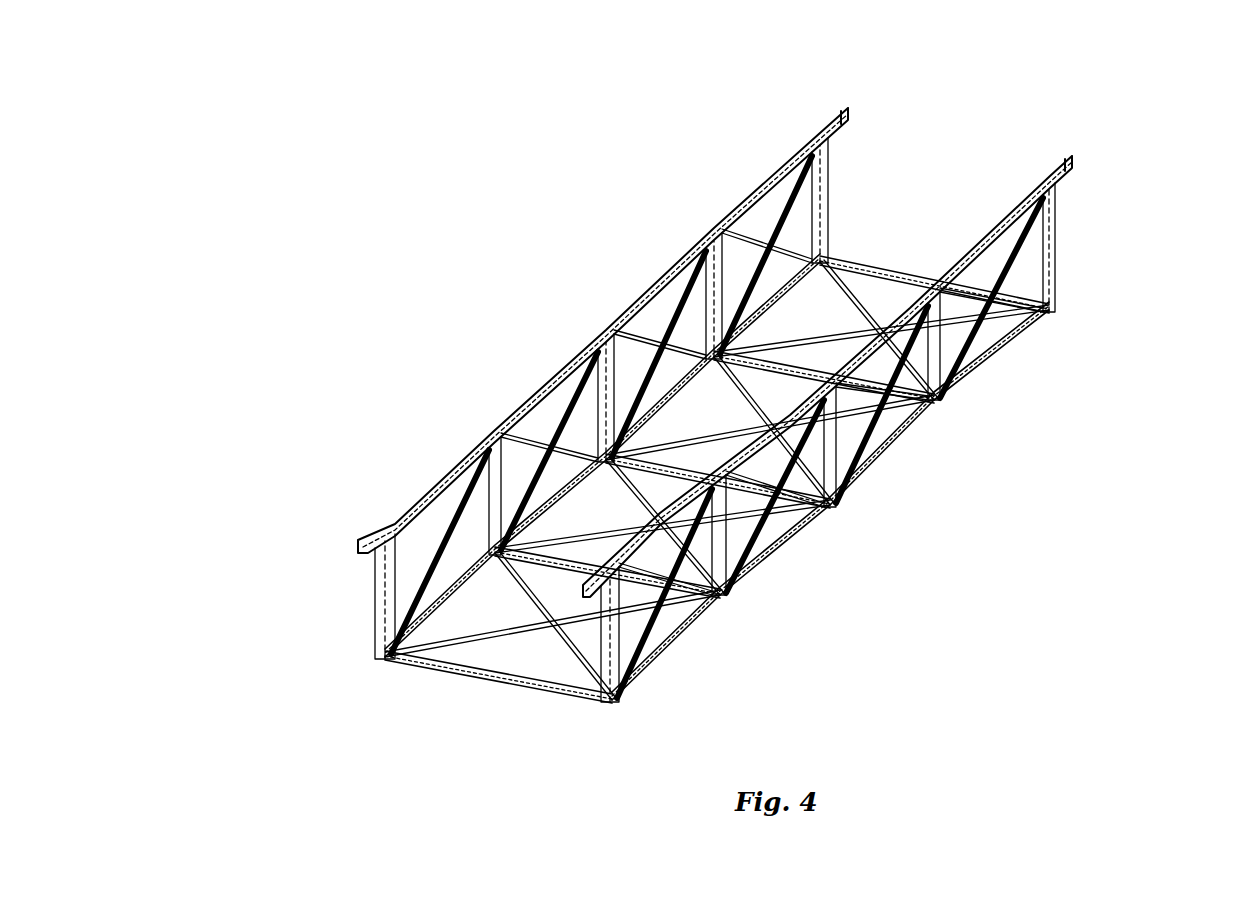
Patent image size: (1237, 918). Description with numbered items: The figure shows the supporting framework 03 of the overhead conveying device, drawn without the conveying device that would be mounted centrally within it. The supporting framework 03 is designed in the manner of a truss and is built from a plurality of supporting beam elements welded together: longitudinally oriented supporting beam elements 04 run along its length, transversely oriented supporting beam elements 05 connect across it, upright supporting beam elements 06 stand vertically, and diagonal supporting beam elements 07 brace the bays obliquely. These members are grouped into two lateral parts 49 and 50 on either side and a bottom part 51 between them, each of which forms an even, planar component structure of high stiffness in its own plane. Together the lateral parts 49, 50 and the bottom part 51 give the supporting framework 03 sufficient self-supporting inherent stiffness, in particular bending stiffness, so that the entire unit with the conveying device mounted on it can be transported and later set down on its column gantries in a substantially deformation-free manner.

The supporting framework 03 is at (709, 415).
The longitudinally oriented supporting beam elements 04 is at (913, 437).
The transversely oriented supporting beam elements 05 is at (424, 487).
The upright supporting beam elements 06 is at (392, 594).
The diagonal supporting beam elements 07 is at (663, 334).
The lateral part 49 is at (1092, 224).
The lateral part 50 is at (850, 162).
The bottom part 51 is at (884, 243).